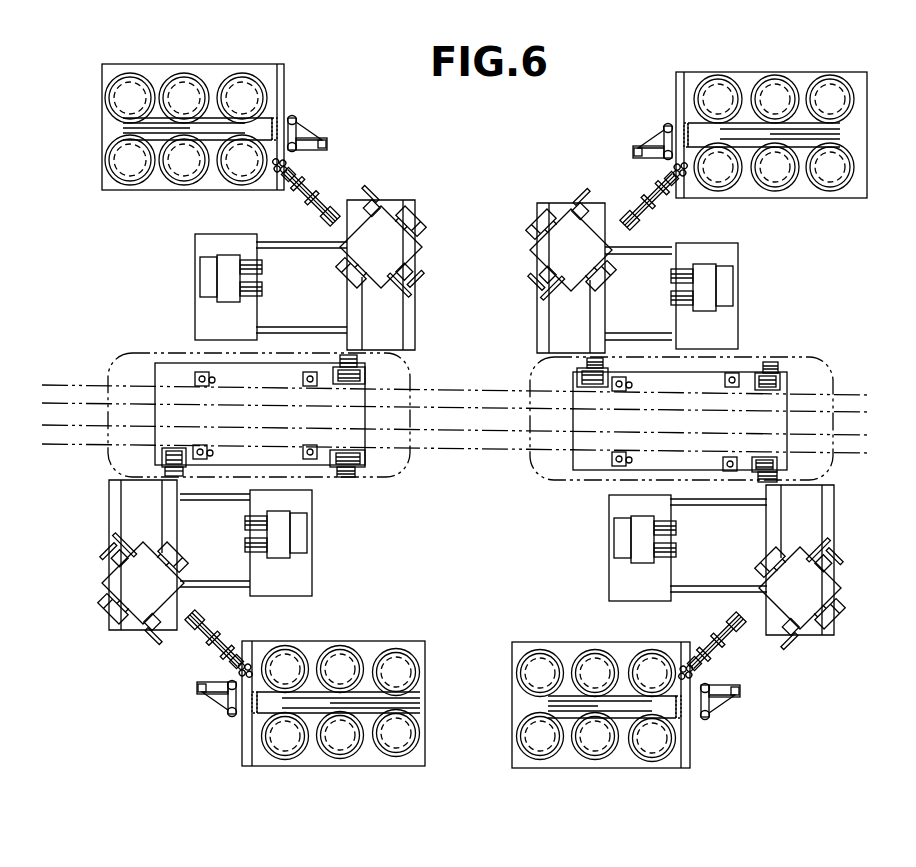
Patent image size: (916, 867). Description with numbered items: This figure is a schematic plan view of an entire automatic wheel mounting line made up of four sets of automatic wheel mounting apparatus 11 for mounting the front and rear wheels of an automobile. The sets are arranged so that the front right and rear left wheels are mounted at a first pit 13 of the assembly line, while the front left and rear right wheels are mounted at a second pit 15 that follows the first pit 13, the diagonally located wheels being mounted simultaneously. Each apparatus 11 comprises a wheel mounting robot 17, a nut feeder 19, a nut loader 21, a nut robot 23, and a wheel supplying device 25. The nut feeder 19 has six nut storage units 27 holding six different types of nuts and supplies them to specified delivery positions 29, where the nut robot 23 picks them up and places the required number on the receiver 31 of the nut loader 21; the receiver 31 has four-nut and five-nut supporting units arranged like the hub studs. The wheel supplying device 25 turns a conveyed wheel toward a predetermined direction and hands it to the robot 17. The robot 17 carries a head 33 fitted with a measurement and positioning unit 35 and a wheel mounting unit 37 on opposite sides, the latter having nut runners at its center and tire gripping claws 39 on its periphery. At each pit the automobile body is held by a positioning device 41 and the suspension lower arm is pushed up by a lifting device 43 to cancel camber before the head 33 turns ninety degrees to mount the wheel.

The automatic wheel mounting apparatus 11 is at (288, 60).
The first pit 13 is at (685, 431).
The second pit 15 is at (270, 426).
The wheel mounting robot 17 is at (408, 200).
The nut feeder 19 is at (180, 63).
The nut loader 21 is at (300, 173).
The nut robot 23 is at (305, 139).
The wheel supplying device 25 is at (230, 260).
The nut storage unit 27 is at (190, 72).
The delivery position 29 is at (277, 118).
The receiver 31 is at (296, 158).
The head 33 is at (408, 247).
The measurement and positioning unit 35 is at (412, 215).
The wheel mounting unit 37 is at (368, 206).
The tire gripping claws 39 is at (371, 188).
The positioning device 41 is at (196, 372).
The lifting device 43 is at (366, 373).